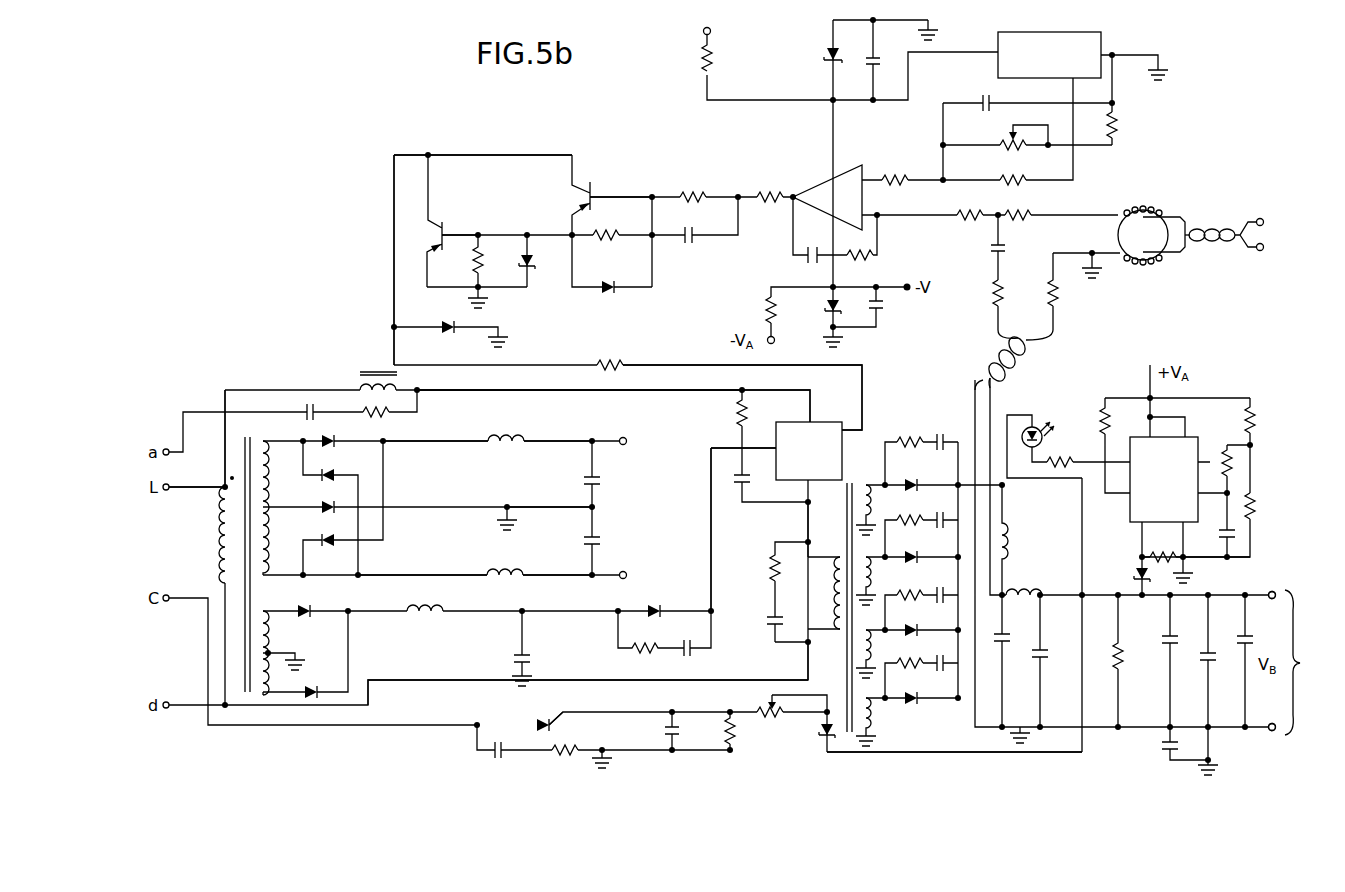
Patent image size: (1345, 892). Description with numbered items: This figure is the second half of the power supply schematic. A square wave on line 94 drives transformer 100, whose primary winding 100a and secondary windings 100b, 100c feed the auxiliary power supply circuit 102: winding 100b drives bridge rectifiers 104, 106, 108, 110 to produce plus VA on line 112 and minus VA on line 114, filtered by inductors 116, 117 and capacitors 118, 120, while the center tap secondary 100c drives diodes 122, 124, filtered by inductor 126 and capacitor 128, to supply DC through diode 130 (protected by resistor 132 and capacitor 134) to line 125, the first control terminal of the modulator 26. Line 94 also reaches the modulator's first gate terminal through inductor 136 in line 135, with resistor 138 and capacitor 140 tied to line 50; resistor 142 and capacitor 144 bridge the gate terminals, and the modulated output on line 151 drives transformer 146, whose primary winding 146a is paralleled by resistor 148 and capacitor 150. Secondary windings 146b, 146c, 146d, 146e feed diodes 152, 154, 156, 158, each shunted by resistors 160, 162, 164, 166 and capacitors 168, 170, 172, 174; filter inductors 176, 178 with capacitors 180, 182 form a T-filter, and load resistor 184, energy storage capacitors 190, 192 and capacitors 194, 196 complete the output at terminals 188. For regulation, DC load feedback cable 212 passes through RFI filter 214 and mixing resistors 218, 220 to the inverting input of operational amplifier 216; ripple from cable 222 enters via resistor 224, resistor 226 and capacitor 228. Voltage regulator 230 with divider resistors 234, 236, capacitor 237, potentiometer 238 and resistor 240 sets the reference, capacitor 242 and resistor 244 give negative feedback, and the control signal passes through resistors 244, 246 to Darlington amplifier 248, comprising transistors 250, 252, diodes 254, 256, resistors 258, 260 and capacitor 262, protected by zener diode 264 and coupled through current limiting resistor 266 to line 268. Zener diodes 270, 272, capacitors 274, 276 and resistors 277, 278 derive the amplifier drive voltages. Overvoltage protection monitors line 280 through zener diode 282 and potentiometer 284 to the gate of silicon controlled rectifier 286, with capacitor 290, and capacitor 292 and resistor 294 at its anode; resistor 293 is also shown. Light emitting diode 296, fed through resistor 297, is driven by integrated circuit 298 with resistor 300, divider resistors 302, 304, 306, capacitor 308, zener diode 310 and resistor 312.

The modulator 26 is at (824, 422).
The line 50 is at (213, 405).
The line 94 is at (198, 482).
The transformer 100 is at (268, 436).
The primary winding 100a is at (224, 548).
The secondary winding 100b is at (306, 499).
The center tap secondary 100c is at (322, 645).
The auxiliary power supply circuit 102 is at (513, 494).
The bridge rectifier 104 is at (338, 432).
The bridge rectifier 106 is at (335, 470).
The bridge rectifier 108 is at (320, 510).
The bridge rectifier 110 is at (320, 546).
The line 112 is at (594, 438).
The line 114 is at (568, 572).
The inductor 116 is at (528, 434).
The inductor 117 is at (524, 578).
The capacitor 118 is at (606, 478).
The capacitor 120 is at (605, 536).
The diode 122 is at (313, 610).
The diode 124 is at (318, 690).
The line 125 is at (712, 500).
The inductor 126 is at (423, 612).
The capacitor 128 is at (514, 653).
The diode 130 is at (658, 613).
The resistor 132 is at (650, 647).
The capacitor 134 is at (693, 652).
The line 135 is at (760, 393).
The inductor 136 is at (360, 380).
The resistor 138 is at (365, 410).
The capacitor 140 is at (305, 406).
The resistor 142 is at (758, 424).
The capacitor 144 is at (748, 485).
The transformer 146 is at (854, 470).
The primary winding 146a is at (838, 586).
The secondary winding 146b is at (907, 509).
The secondary winding 146c is at (904, 584).
The secondary winding 146d is at (902, 653).
The secondary winding 146e is at (906, 731).
The resistor 148 is at (776, 558).
The capacitor 150 is at (780, 616).
The line 151 is at (810, 535).
The diode 152 is at (914, 490).
The diode 154 is at (914, 563).
The diode 156 is at (914, 636).
The diode 158 is at (915, 704).
The resistor 160 is at (905, 456).
The resistor 162 is at (905, 533).
The resistor 164 is at (905, 606).
The resistor 166 is at (905, 675).
The capacitor 168 is at (946, 451).
The capacitor 170 is at (946, 529).
The capacitor 172 is at (946, 604).
The capacitor 174 is at (945, 672).
The filter inductor 176 is at (1010, 540).
The filter inductor 178 is at (1030, 590).
The capacitor 180 is at (1010, 632).
The capacitor 182 is at (1047, 650).
The load resistor 184 is at (1127, 663).
The output terminals 188 is at (1290, 665).
The energy storage capacitor 190 is at (1172, 632).
The energy storage capacitor 192 is at (1268, 625).
The capacitor 194 is at (1215, 662).
The capacitor 196 is at (1163, 757).
The DC load feedback cable 212 is at (1256, 216).
The RFI filter 214 is at (1148, 208).
The operational amplifier 216 is at (826, 172).
The mixing resistor 218 is at (1035, 212).
The mixing resistor 220 is at (963, 210).
The cable 222 is at (1032, 352).
The resistor 224 is at (1060, 300).
The resistor 226 is at (993, 292).
The capacitor 228 is at (993, 247).
The voltage regulator 230 is at (1105, 42).
The voltage divider resistor 234 is at (1022, 180).
The voltage divider resistor 236 is at (897, 175).
The capacitor 237 is at (987, 92).
The potentiometer 238 is at (998, 142).
The resistor 240 is at (1120, 128).
The capacitor 242 is at (806, 257).
The resistor 244 is at (786, 190).
The resistor 246 is at (706, 190).
The Darlington amplifier 248 is at (516, 191).
The transistor 250 is at (590, 182).
The transistor 252 is at (446, 224).
The diode 254 is at (533, 266).
The diode 256 is at (607, 282).
The resistor 258 is at (474, 258).
The resistor 260 is at (603, 232).
The capacitor 262 is at (695, 246).
The zener diode 264 is at (445, 335).
The current limiting resistor 266 is at (620, 362).
The line 268 is at (865, 388).
The zener diode 270 is at (827, 62).
The zener diode 272 is at (827, 308).
The filter capacitor 274 is at (875, 58).
The filter capacitor 276 is at (883, 310).
The resistor 277 is at (703, 62).
The resistor 278 is at (766, 312).
The line 280 is at (950, 733).
The zener diode 282 is at (824, 734).
The potentiometer 284 is at (765, 715).
The silicon controlled rectifier 286 is at (556, 708).
The capacitor 290 is at (665, 735).
The capacitor 292 is at (504, 737).
The resistor 293 is at (717, 735).
The resistor 294 is at (554, 757).
The light emitting diode 296 is at (1048, 418).
The resistor 297 is at (1060, 455).
The integrated circuit 298 is at (1178, 486).
The resistor 300 is at (1100, 400).
The voltage divider resistor 302 is at (1262, 424).
The voltage divider resistor 304 is at (1248, 518).
The voltage divider resistor 306 is at (1223, 454).
The capacitor 308 is at (1218, 534).
The zener diode 310 is at (1137, 565).
The resistor 312 is at (1165, 557).